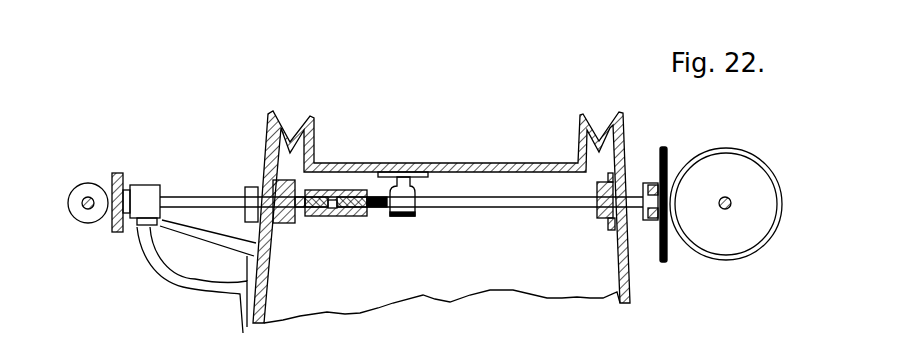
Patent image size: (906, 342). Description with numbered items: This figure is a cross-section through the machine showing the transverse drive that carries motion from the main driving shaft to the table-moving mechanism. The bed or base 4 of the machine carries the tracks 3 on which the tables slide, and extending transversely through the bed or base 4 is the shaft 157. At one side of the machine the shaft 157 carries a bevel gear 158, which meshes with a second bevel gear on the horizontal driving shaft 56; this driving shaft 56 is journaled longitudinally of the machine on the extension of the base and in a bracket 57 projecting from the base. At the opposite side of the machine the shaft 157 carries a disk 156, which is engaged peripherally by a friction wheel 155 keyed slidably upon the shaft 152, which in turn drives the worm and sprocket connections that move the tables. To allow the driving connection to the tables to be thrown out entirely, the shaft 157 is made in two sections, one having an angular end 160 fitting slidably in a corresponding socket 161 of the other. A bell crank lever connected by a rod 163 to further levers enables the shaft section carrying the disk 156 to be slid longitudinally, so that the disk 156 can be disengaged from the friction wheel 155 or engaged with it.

The track 3 is at (289, 128).
The bed or base 4 is at (442, 295).
The driving shaft 56 is at (83, 210).
The bracket 57 is at (197, 230).
The shaft 152 is at (725, 209).
The friction wheel 155 is at (726, 204).
The disk 156 is at (667, 158).
The shaft 157 is at (458, 207).
The bevel gear 158 is at (122, 172).
The angular end 160 is at (354, 208).
The socket 161 is at (331, 209).
The rod 163 is at (648, 183).